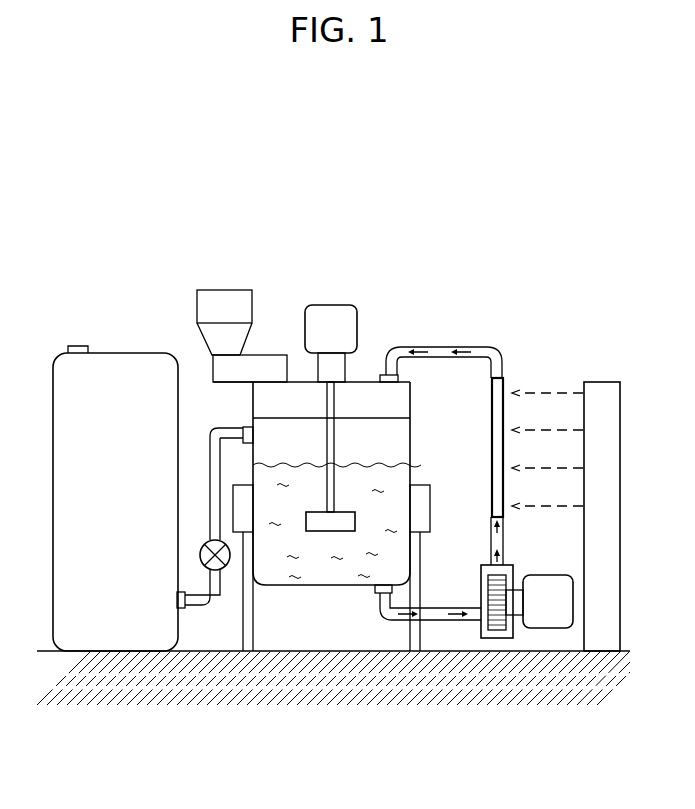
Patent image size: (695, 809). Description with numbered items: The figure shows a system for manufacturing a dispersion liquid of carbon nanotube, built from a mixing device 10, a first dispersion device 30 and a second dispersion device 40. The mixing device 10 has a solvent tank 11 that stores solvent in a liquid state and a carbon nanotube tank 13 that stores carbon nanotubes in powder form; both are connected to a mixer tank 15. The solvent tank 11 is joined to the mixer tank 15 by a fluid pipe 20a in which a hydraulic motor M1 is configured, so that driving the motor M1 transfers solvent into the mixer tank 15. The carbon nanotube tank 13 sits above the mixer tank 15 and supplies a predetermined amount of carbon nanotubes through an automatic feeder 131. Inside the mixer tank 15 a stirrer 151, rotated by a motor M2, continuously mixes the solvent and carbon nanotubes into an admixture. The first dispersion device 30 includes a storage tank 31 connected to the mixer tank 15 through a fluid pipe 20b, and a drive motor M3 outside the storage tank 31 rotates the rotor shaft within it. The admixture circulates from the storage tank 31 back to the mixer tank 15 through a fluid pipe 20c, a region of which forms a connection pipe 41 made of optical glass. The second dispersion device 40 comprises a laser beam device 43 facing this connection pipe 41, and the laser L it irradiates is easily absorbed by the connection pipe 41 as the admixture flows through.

The mixing device 10 is at (164, 305).
The solvent tank 11 is at (63, 407).
The carbon nanotube tank 13 is at (234, 297).
The automatic feeder 131 is at (270, 355).
The mixer tank 15 is at (406, 432).
The stirrer 151 is at (316, 531).
The fluid pipe 20a is at (217, 428).
The fluid pipe 20b is at (432, 621).
The fluid pipe 20c is at (447, 347).
The first dispersion device 30 is at (522, 660).
The storage tank 31 is at (490, 640).
The second dispersion device 40 is at (594, 362).
The connection pipe 41 is at (505, 382).
The laser beam device 43 is at (611, 403).
The laser L is at (553, 393).
The hydraulic motor M1 is at (226, 567).
The motor M2 is at (331, 343).
The drive motor M3 is at (539, 601).